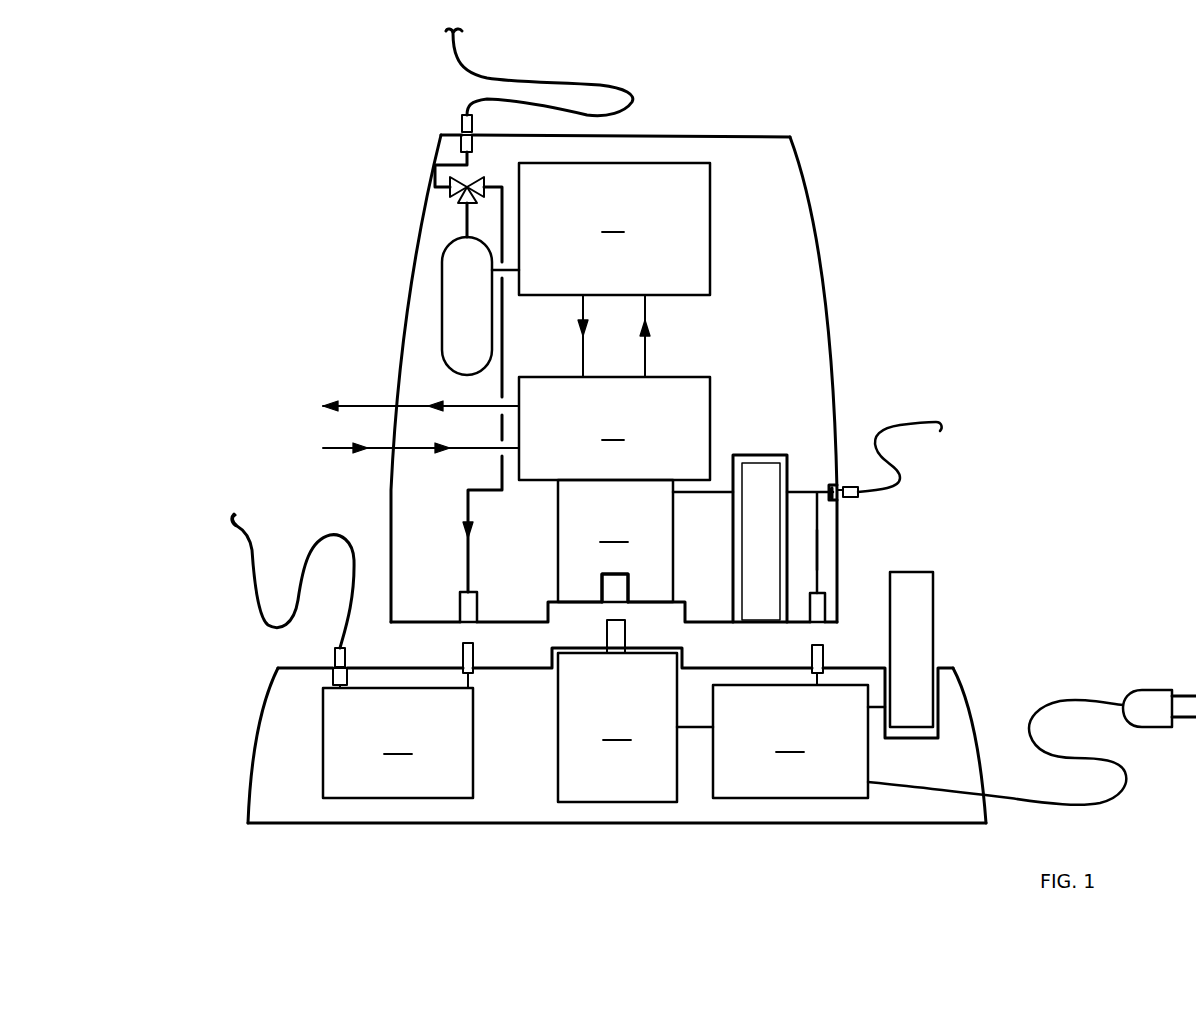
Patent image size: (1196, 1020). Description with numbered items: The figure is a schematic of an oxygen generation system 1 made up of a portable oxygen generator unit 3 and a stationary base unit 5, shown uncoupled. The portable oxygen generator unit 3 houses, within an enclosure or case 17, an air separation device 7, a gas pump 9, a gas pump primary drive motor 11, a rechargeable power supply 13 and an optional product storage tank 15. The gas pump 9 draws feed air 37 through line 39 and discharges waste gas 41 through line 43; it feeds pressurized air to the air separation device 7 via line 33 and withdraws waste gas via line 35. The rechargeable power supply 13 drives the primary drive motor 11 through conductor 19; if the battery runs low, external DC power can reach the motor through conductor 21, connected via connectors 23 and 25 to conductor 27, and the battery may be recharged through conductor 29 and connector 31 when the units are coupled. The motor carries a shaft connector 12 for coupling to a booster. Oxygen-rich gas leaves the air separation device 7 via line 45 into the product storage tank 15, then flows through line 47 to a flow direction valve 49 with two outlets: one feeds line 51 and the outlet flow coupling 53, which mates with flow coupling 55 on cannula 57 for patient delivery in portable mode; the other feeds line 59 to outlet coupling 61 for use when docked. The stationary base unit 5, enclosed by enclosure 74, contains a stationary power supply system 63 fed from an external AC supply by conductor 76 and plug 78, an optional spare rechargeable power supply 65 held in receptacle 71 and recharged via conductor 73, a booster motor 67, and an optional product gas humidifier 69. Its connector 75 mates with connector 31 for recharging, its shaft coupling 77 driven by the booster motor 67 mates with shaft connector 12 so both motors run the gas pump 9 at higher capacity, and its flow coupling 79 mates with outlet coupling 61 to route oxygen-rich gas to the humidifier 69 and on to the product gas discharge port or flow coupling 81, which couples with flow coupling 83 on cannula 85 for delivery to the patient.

The oxygen generation system 1 is at (976, 246).
The portable oxygen generator unit 3 is at (830, 201).
The stationary base unit 5 is at (228, 726).
The air separation device 7 is at (614, 229).
The gas pump 9 is at (614, 428).
The gas pump primary drive motor 11 is at (615, 541).
The shaft connector 12 is at (615, 588).
The rechargeable power supply 13 is at (758, 468).
The product storage tank 15 is at (440, 318).
The enclosure or case 17 is at (828, 303).
The conductor 19 is at (713, 496).
The conductor 21 is at (802, 490).
The connector 23 is at (835, 510).
The connector 25 is at (848, 485).
The conductor 27 is at (902, 480).
The conductor 29 is at (818, 563).
The connector 31 is at (824, 607).
The line 33 is at (647, 359).
The line 35 is at (583, 358).
The feed air 37 is at (341, 450).
The line 39 is at (483, 450).
The waste gas 41 is at (363, 404).
The line 43 is at (460, 404).
The line 45 is at (506, 274).
The line 47 is at (464, 224).
The flow direction valve 49 is at (452, 192).
The line 51 is at (435, 175).
The product discharge port or outlet flow coupling 53 is at (460, 142).
The flow coupling 55 is at (461, 120).
The cannula 57 is at (635, 101).
The line 59 is at (467, 560).
The outlet coupling 61 is at (460, 607).
The stationary power supply system 63 is at (790, 741).
The spare rechargeable power supply 65 is at (936, 617).
The booster motor 67 is at (635, 727).
The product gas humidifier 69 is at (398, 743).
The receptacle 71 is at (947, 703).
The conductor 73 is at (877, 710).
The enclosure 74 is at (250, 786).
The connector 75 is at (824, 657).
The conductor 76 is at (1067, 806).
The shaft coupling 77 is at (627, 642).
The plug 78 is at (1148, 700).
The flow coupling 79 is at (474, 661).
The product gas discharge port or flow coupling 81 is at (348, 677).
The flow coupling 83 is at (333, 659).
The cannula 85 is at (262, 602).